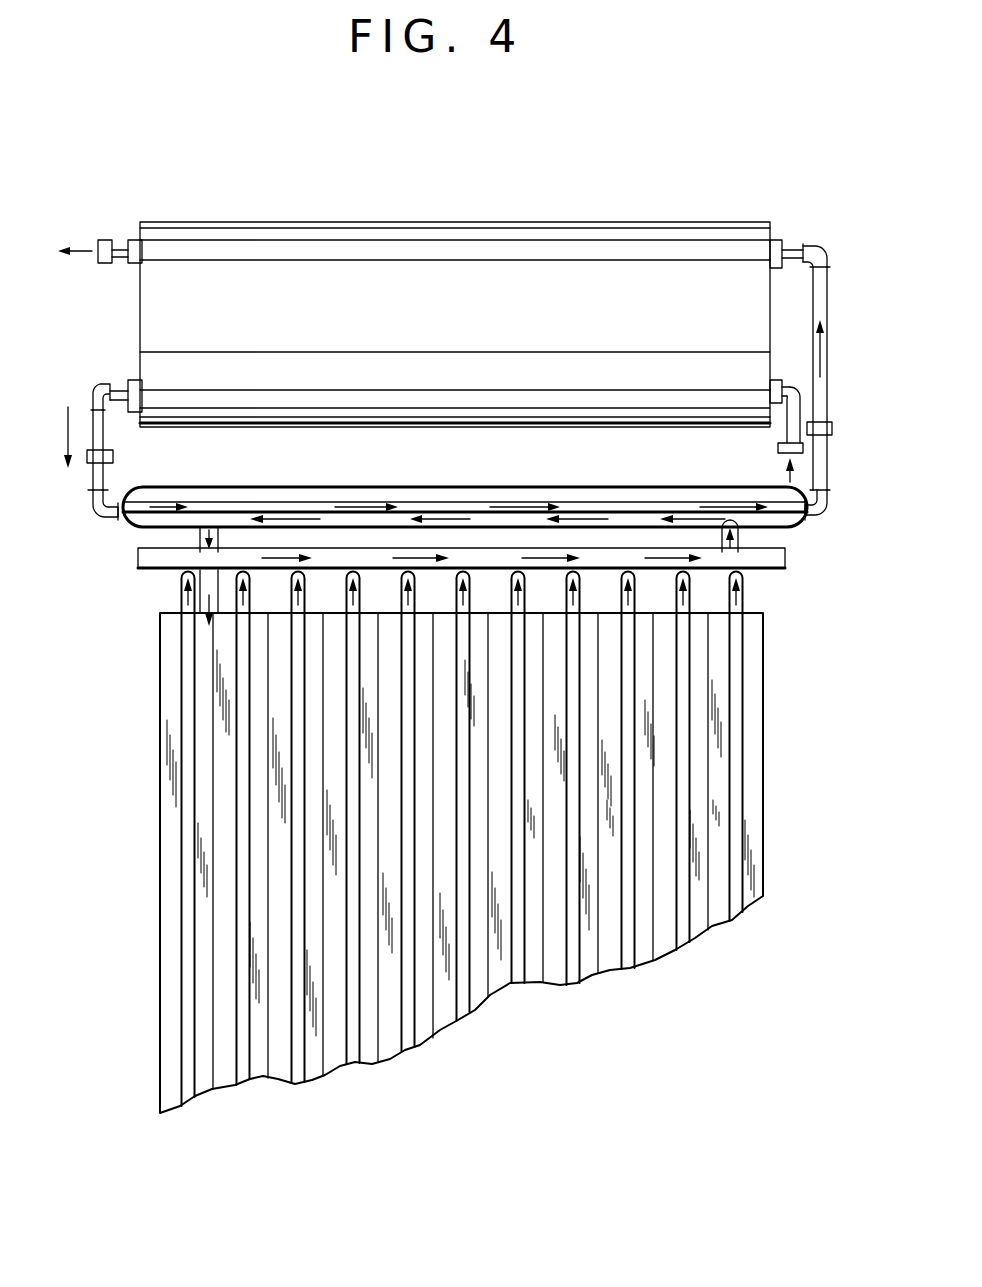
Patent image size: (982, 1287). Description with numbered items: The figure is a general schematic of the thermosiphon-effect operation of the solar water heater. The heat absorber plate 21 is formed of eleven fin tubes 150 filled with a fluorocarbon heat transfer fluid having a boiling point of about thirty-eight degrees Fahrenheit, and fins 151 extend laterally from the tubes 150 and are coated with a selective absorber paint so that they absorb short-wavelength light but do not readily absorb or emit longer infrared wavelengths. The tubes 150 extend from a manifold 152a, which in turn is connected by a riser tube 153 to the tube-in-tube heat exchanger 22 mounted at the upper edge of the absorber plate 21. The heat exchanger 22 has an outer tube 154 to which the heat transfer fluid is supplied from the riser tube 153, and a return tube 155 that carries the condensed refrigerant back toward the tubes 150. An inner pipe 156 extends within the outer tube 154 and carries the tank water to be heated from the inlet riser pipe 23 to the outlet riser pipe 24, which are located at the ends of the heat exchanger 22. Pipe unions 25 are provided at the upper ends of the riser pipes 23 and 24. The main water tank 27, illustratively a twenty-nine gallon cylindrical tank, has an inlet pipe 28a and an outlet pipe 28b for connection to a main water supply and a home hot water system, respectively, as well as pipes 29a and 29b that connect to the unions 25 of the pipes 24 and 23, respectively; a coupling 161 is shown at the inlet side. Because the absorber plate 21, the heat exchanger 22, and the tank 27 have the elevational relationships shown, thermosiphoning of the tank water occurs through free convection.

The absorber plate 21 is at (140, 820).
The tube-in-tube heat exchanger 22 is at (305, 478).
The inlet riser pipe 23 is at (90, 484).
The outlet riser pipe 24 is at (828, 476).
The pipe union 25 is at (115, 454).
The main water tank 27 is at (432, 232).
The inlet pipe 28a is at (784, 468).
The outlet pipe 28b is at (86, 240).
The tank connecting pipe 29a is at (824, 308).
The tank connecting pipe 29b is at (110, 386).
The fin tubes 150 is at (733, 858).
The fins 151 is at (755, 882).
The manifold 152a is at (788, 564).
The riser tube 153 is at (742, 536).
The outer tube 154 is at (505, 490).
The return tube 155 is at (200, 542).
The inner pipe 156 is at (392, 502).
The inlet coupling 161 is at (778, 448).